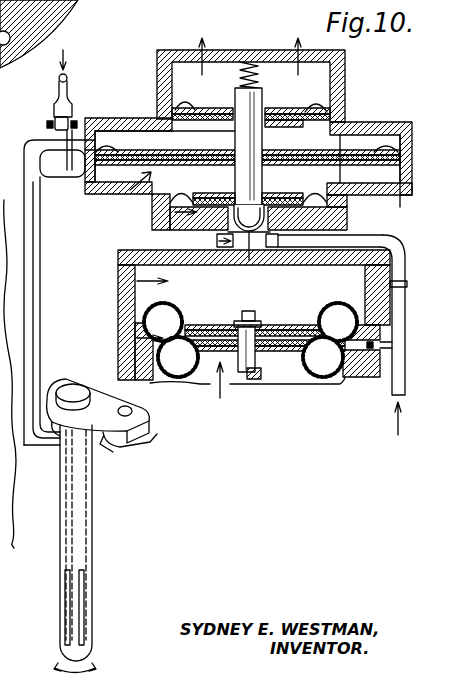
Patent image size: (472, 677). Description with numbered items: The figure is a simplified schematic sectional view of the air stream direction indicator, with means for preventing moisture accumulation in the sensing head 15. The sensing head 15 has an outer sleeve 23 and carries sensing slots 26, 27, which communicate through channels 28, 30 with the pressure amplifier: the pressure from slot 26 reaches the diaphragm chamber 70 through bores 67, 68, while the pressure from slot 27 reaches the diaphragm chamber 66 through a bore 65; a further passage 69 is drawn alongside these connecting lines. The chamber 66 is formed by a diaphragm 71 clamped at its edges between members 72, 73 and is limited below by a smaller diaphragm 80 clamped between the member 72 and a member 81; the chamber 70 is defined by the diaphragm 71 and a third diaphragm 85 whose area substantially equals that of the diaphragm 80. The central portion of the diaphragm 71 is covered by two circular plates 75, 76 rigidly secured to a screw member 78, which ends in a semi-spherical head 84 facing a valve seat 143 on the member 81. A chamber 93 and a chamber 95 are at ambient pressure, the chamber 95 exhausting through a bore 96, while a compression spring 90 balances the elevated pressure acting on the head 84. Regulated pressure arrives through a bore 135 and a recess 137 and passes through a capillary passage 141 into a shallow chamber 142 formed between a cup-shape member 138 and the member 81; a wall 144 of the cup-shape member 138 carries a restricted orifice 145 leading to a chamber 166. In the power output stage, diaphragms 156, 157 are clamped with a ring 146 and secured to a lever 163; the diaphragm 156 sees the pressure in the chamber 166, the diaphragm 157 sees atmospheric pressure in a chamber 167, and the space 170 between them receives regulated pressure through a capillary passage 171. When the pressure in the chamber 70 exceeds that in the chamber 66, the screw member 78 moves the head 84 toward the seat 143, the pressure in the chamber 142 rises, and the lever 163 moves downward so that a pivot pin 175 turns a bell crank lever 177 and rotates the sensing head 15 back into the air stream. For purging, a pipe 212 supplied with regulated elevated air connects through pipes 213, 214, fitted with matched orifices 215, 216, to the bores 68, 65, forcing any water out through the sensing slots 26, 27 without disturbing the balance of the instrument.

The sensing head 15 is at (115, 548).
The sleeve 23 is at (59, 494).
The sensing slot 26 is at (65, 592).
The sensing slot 27 is at (84, 600).
The channel 28 is at (66, 540).
The channel 30 is at (88, 538).
The bore 65 is at (55, 176).
The diaphragm chamber 66 is at (128, 196).
The bore 67 is at (33, 256).
The bore 68 is at (40, 142).
The pipe 69 is at (40, 286).
The diaphragm chamber 70 is at (147, 131).
The diaphragm 71 is at (304, 150).
The member 72 is at (375, 197).
The member 73 is at (406, 122).
The circular plate 75 is at (353, 167).
The circular plate 76 is at (372, 150).
The screw member 78 is at (236, 142).
The diaphragm 80 is at (176, 188).
The member 81 is at (341, 232).
The semi-spherical head 84 is at (233, 234).
The diaphragm 85 is at (325, 116).
The compression spring 90 is at (250, 60).
The chamber 93 is at (187, 68).
The chamber 95 is at (158, 214).
The bore 96 is at (340, 210).
The bore 135 is at (398, 396).
The recess 137 is at (392, 310).
The cup-shape member 138 is at (370, 267).
The capillary passage 141 is at (411, 249).
The shallow chamber 142 is at (213, 241).
The valve seat 143 is at (266, 233).
The wall 144 is at (256, 242).
The orifice 145 is at (247, 308).
The ring 146 is at (122, 346).
The diaphragm 156 is at (322, 310).
The diaphragm 157 is at (326, 377).
The lever 163 is at (262, 380).
The chamber 166 is at (120, 276).
The chamber 167 is at (213, 378).
The space 170 is at (122, 330).
The capillary passage 171 is at (357, 384).
The pivot pin 175 is at (133, 412).
The bell crank lever 177 is at (112, 438).
The pipe 212 is at (66, 80).
The pipe 213 is at (53, 122).
The pipe 214 is at (77, 122).
The orifice 215 is at (47, 123).
The orifice 216 is at (74, 135).